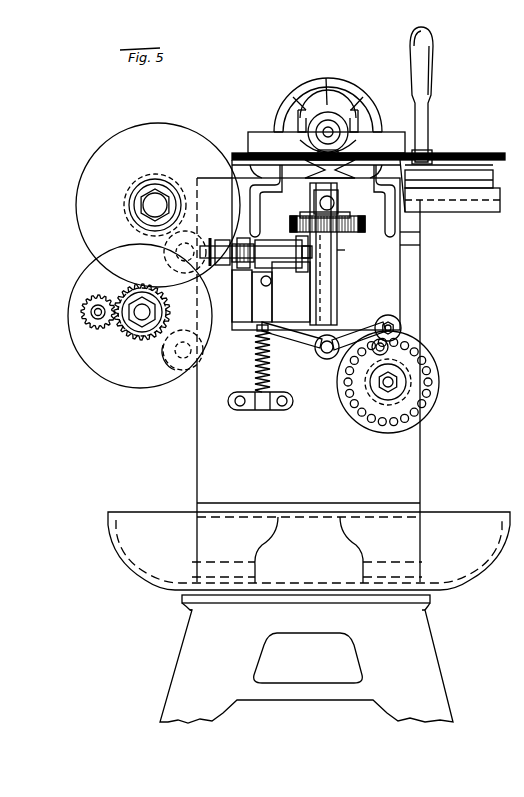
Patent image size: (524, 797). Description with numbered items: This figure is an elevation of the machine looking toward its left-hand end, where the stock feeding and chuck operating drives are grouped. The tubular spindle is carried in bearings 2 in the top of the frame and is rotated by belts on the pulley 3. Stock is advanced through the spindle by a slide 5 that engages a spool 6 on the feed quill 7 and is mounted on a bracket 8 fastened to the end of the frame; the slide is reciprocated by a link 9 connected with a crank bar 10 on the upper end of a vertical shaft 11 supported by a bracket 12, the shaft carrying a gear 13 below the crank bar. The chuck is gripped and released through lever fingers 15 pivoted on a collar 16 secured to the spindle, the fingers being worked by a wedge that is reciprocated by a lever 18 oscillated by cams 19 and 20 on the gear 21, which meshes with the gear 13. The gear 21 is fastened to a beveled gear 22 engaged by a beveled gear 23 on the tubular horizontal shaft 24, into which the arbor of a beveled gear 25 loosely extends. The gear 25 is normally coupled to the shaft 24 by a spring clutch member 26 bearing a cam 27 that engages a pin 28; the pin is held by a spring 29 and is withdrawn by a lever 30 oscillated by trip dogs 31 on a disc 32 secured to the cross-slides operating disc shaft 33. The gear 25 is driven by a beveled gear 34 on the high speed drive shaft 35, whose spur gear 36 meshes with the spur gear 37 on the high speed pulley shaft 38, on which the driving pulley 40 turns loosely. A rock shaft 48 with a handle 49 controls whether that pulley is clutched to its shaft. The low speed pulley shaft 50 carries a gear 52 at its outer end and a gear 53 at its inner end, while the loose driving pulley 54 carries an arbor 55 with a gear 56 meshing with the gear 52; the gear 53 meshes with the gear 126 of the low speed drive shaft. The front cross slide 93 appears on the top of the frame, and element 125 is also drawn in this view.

The bearings 2 is at (360, 100).
The pulley 3 is at (345, 88).
The slide 5 is at (330, 169).
The spool 6 is at (303, 102).
The feed quill 7 is at (284, 110).
The bracket 8 is at (430, 168).
The link 9 is at (422, 182).
The crank bar 10 is at (340, 205).
The vertical shaft 11 is at (338, 290).
The bracket 12 is at (338, 305).
The gear 13 is at (400, 246).
The lever fingers 15 is at (328, 104).
The collar 16 is at (372, 110).
The lever 18 is at (376, 134).
The cam 19 is at (366, 225).
The cam 20 is at (318, 205).
The gear 21 is at (370, 236).
The beveled gear 22 is at (345, 251).
The beveled gear 23 is at (340, 256).
The tubular horizontal shaft 24 is at (222, 265).
The beveled gear 25 is at (212, 250).
The spring clutch member 26 is at (268, 242).
The cam 27 is at (281, 254).
The pin 28 is at (273, 286).
The spring 29 is at (269, 370).
The lever 30 is at (298, 338).
The trip dog 31 is at (402, 333).
The disc 32 is at (434, 368).
The cross-slides operating disc shaft 33 is at (396, 382).
The beveled gear 34 is at (178, 262).
The high speed drive shaft 35 is at (168, 250).
The spur gear 36 is at (197, 236).
The spur gear 37 is at (134, 216).
The high speed pulley shaft 38 is at (150, 205).
The driving pulley 40 is at (158, 205).
The rock shaft 48 is at (238, 152).
The handle 49 is at (430, 126).
The low speed pulley shaft 50 is at (160, 310).
The gear 52 is at (120, 332).
The gear 53 is at (140, 340).
The driving pulley 54 is at (70, 346).
The arbor 55 is at (90, 306).
The gear 56 is at (88, 318).
The front cross slide 93 is at (480, 180).
The lower roller 125 is at (170, 368).
The gear 126 is at (188, 372).